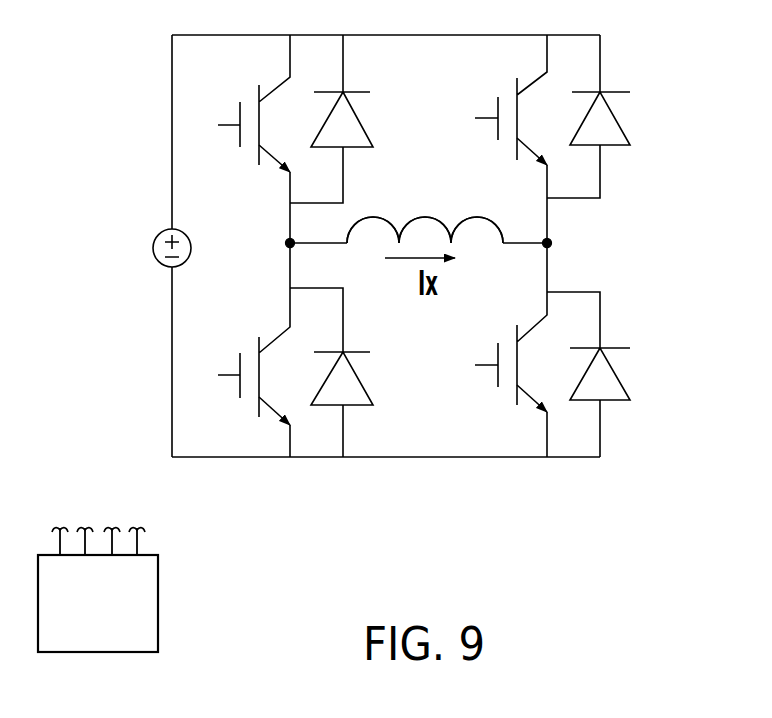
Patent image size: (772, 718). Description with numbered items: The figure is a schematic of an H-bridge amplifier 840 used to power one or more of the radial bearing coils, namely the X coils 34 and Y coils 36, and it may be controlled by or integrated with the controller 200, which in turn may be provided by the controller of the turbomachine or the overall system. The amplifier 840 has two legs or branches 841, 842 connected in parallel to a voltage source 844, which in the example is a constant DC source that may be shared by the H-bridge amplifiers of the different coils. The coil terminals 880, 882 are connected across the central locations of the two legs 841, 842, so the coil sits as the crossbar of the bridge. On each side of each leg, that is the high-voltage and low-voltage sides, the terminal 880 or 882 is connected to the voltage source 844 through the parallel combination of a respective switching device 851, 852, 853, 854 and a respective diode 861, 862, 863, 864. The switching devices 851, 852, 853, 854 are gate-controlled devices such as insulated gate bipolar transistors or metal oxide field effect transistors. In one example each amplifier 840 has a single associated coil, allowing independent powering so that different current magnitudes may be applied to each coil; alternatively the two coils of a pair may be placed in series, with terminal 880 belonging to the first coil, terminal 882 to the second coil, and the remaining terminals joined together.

The X coils 34 is at (437, 202).
The Y coils 36 is at (425, 230).
The controller 200 is at (117, 617).
The H-bridge amplifier 840 is at (432, 477).
The first leg 841 is at (317, 468).
The second leg 842 is at (573, 465).
The voltage source 844 is at (152, 238).
The switching device 851 is at (232, 112).
The switching device 852 is at (232, 382).
The switching device 853 is at (488, 112).
The switching device 854 is at (487, 377).
The diode 861 is at (377, 152).
The diode 862 is at (380, 390).
The diode 863 is at (642, 115).
The diode 864 is at (638, 380).
The coil terminal 880 is at (285, 247).
The coil terminal 882 is at (555, 246).